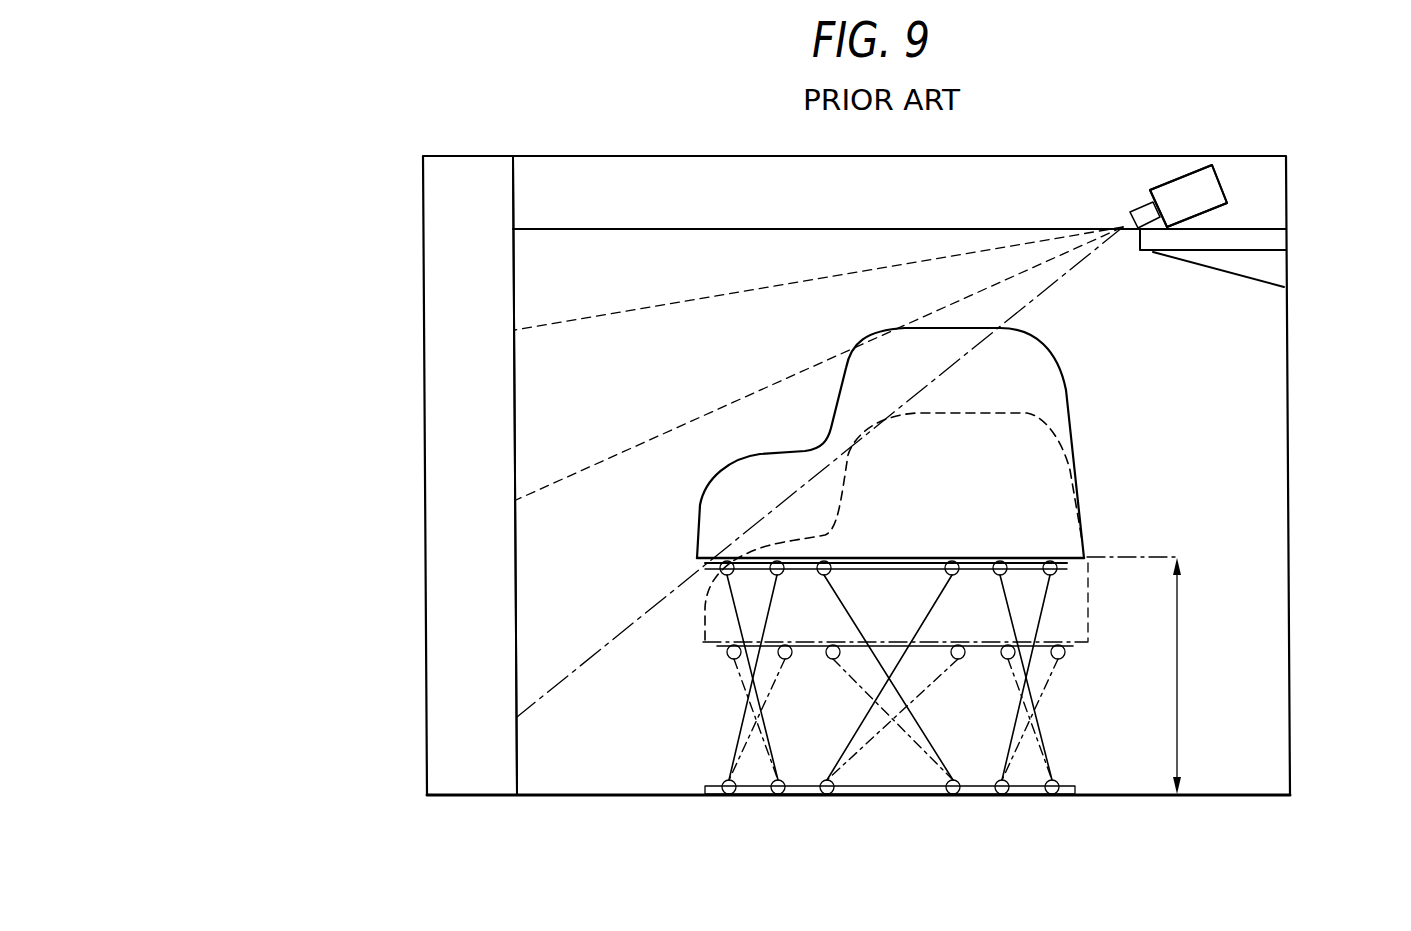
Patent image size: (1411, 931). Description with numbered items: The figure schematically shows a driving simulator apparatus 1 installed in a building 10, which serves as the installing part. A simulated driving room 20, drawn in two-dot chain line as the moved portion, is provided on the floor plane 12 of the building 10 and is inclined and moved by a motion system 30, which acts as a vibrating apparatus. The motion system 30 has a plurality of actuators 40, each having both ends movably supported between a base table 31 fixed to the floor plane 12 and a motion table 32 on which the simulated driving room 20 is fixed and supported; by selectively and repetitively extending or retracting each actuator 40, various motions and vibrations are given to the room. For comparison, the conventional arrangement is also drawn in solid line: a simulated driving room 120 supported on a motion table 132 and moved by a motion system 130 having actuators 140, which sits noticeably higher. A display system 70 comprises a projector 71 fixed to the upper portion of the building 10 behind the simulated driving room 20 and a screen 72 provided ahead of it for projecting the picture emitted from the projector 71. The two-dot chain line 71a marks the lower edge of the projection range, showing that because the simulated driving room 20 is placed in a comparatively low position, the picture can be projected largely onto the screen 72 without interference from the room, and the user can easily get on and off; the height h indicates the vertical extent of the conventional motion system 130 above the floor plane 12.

The driving simulator apparatus 1 is at (1335, 290).
The building 10 is at (543, 140).
The floor plane 12 is at (622, 798).
The simulated driving room 20 is at (1073, 415).
The simulated driving room 120 is at (1058, 362).
The motion system 30 is at (728, 680).
The motion system 130 is at (874, 712).
The base table 31 is at (893, 798).
The motion table 32 is at (1072, 650).
The motion table 132 is at (883, 573).
The actuator 40 is at (770, 682).
The actuator 140 is at (772, 605).
The display system 70 is at (1137, 165).
The projector 71 is at (1195, 182).
The two-dot chain line 71a is at (628, 628).
The screen 72 is at (513, 422).
The lift height h is at (1137, 675).